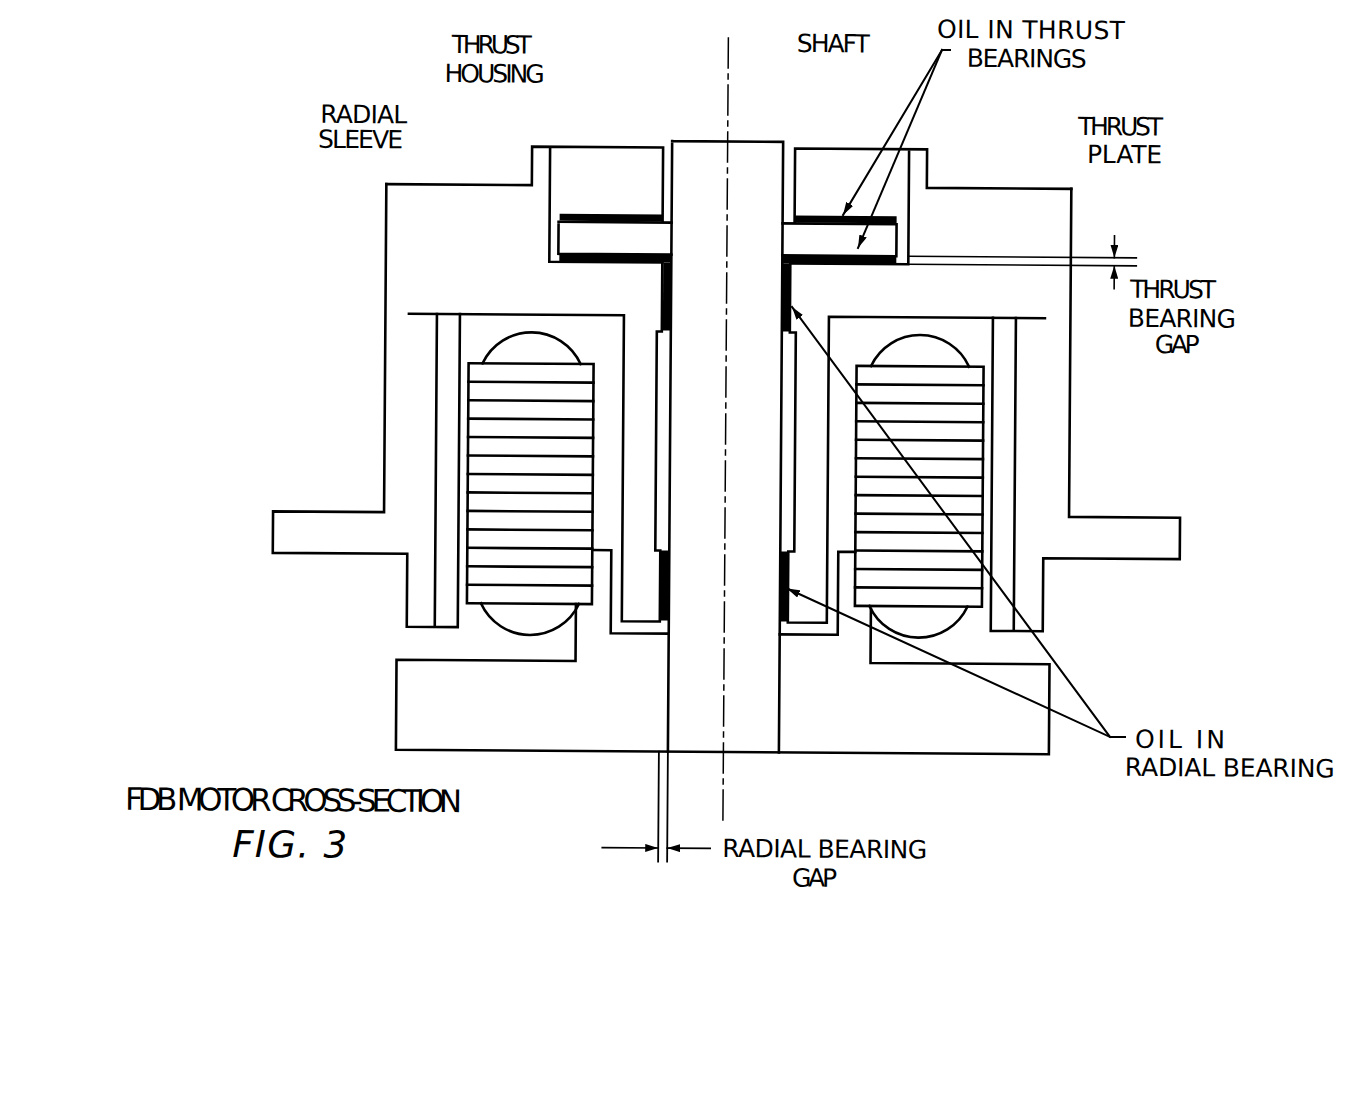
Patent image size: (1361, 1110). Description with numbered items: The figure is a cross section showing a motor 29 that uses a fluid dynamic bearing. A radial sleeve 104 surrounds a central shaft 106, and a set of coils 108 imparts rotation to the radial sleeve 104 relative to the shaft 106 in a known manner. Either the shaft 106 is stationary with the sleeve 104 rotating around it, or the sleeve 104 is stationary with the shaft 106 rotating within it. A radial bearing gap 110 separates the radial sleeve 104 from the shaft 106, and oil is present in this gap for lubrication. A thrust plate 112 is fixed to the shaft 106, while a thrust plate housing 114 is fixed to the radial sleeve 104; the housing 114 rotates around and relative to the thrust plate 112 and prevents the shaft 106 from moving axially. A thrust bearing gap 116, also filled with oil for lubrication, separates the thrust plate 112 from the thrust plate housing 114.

The motor 29 is at (1223, 435).
The radial sleeve 104 is at (619, 364).
The shaft 106 is at (763, 140).
The coils 108 is at (965, 408).
The radial bearing gap 110 is at (703, 848).
The thrust plate 112 is at (896, 236).
The thrust plate housing 114 is at (592, 278).
The thrust bearing gap 116 is at (1116, 245).